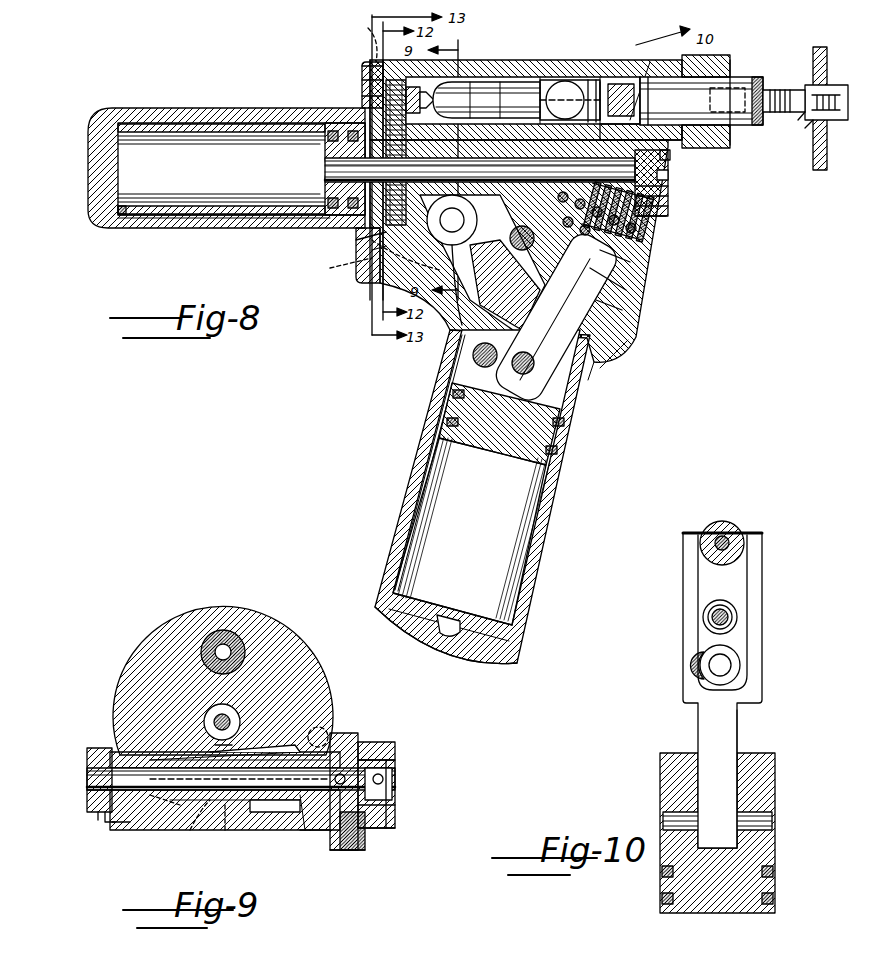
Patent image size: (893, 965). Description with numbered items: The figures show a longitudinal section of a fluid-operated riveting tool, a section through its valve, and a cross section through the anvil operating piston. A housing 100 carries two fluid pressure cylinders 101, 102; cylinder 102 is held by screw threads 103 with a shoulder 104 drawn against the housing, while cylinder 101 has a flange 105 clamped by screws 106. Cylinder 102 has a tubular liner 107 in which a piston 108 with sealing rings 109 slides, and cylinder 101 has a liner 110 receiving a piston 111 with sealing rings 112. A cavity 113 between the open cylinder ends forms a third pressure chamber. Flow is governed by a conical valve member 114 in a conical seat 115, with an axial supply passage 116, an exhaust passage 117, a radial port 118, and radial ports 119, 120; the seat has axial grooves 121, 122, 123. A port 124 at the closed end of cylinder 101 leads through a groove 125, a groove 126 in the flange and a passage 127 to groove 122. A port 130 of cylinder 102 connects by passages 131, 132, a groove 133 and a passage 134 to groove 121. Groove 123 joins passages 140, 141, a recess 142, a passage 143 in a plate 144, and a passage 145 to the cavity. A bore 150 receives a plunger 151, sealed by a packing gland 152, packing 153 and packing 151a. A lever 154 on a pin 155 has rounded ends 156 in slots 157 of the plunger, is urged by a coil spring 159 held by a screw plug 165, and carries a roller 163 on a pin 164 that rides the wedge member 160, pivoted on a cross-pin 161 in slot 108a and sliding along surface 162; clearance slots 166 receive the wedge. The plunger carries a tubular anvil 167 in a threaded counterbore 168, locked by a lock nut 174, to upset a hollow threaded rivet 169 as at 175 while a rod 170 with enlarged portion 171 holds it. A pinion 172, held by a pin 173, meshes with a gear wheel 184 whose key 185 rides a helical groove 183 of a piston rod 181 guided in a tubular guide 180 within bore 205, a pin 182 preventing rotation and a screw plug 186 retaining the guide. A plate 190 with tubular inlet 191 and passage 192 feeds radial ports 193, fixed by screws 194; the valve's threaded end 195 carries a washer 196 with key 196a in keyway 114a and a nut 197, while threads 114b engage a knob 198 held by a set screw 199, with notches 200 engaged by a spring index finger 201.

In FIG. 8, the housing 100 is at (527, 70).
In FIG. 9, the housing 100 is at (150, 658).
In FIG. 8, the fluid pressure cylinder 101 is at (128, 110).
In FIG. 8, the fluid pressure cylinder 102 is at (560, 520).
In FIG. 8, the screw threads 103 is at (636, 320).
In FIG. 8, the shoulder 104 is at (618, 352).
In FIG. 8, the flange 105 is at (368, 62).
In FIG. 8, the screws 106 is at (366, 30).
In FIG. 8, the tubular liner 107 is at (540, 556).
In FIG. 8, the piston 108 is at (550, 478).
In FIG. 10, the piston 108 is at (760, 851).
In FIG. 8, the slot 108a is at (592, 372).
In FIG. 10, the slot 108a is at (732, 760).
In FIG. 8, the sealing rings 109 is at (556, 455).
In FIG. 10, the sealing rings 109 is at (770, 892).
In FIG. 8, the liner 110 is at (186, 126).
In FIG. 8, the piston 111 is at (330, 132).
In FIG. 8, the sealing rings 112 is at (310, 221).
In FIG. 8, the cavity 113 is at (606, 126).
In FIG. 8, the valve member 114 is at (356, 278).
In FIG. 9, the valve member 114 is at (100, 770).
In FIG. 9, the keyway 114a is at (120, 826).
In FIG. 9, the threaded end 114b is at (390, 828).
In FIG. 9, the conical seat 115 is at (312, 832).
In FIG. 8, the supply passage 116 is at (366, 263).
In FIG. 9, the supply passage 116 is at (352, 733).
In FIG. 9, the exhaust passage 117 is at (100, 780).
In FIG. 8, the radial port 118 is at (505, 280).
In FIG. 9, the radial port 118 is at (274, 812).
In FIG. 8, the radial port 119 is at (500, 160).
In FIG. 9, the radial port 119 is at (170, 754).
In FIG. 8, the radial port 120 is at (322, 268).
In FIG. 9, the radial port 120 is at (160, 808).
In FIG. 8, the axial groove 121 is at (482, 265).
In FIG. 9, the axial groove 121 is at (302, 830).
In FIG. 8, the axial groove 122 is at (445, 245).
In FIG. 9, the axial groove 122 is at (170, 845).
In FIG. 8, the axial groove 123 is at (408, 162).
In FIG. 9, the axial groove 123 is at (210, 760).
In FIG. 8, the port 124 is at (120, 222).
In FIG. 8, the groove 125 is at (196, 214).
In FIG. 8, the groove 126 is at (356, 240).
In FIG. 8, the passage 127 is at (320, 268).
In FIG. 9, the passage 127 is at (215, 840).
In FIG. 8, the port 130 is at (472, 650).
In FIG. 8, the passage 131 is at (440, 640).
In FIG. 8, the passage 132 is at (395, 625).
In FIG. 8, the groove 133 is at (402, 535).
In FIG. 8, the passage 134 is at (460, 310).
In FIG. 9, the passage 134 is at (222, 830).
In FIG. 8, the passage 140 is at (505, 78).
In FIG. 9, the passage 140 is at (220, 758).
In FIG. 8, the passage 141 is at (548, 82).
In FIG. 8, the recess 142 is at (372, 250).
In FIG. 8, the passage 143 is at (338, 178).
In FIG. 8, the plate 144 is at (332, 164).
In FIG. 8, the passage 145 is at (660, 204).
In FIG. 9, the passage 145 is at (224, 740).
In FIG. 10, the passage 145 is at (708, 626).
In FIG. 8, the cylindrical bore 150 is at (472, 78).
In FIG. 9, the cylindrical bore 150 is at (248, 652).
In FIG. 8, the plunger 151 is at (682, 77).
In FIG. 10, the plunger 151 is at (712, 520).
In FIG. 8, the packing 151a is at (586, 80).
In FIG. 8, the packing gland 152 is at (712, 55).
In FIG. 8, the packing 153 is at (700, 60).
In FIG. 8, the lever 154 is at (636, 289).
In FIG. 8, the pin 155 is at (636, 305).
In FIG. 8, the lever ends 156 is at (615, 78).
In FIG. 8, the slots 157 is at (600, 78).
In FIG. 8, the coil spring 159 is at (644, 256).
In FIG. 10, the coil spring 159 is at (742, 662).
In FIG. 8, the wedge member 160 is at (560, 362).
In FIG. 10, the wedge member 160 is at (754, 692).
In FIG. 8, the cross-pin 161 is at (545, 385).
In FIG. 10, the cross-pin 161 is at (760, 804).
In FIG. 8, the surface 162 is at (644, 270).
In FIG. 8, the roller 163 is at (472, 355).
In FIG. 8, the pin 164 is at (485, 372).
In FIG. 8, the screw plug 165 is at (648, 234).
In FIG. 8, the clearance slots 166 is at (618, 62).
In FIG. 10, the clearance slots 166 is at (692, 530).
In FIG. 8, the tubular anvil 167 is at (800, 90).
In FIG. 8, the threaded counterbore 168 is at (730, 72).
In FIG. 8, the hollow threaded rivet 169 is at (810, 132).
In FIG. 8, the rod 170 is at (806, 122).
In FIG. 9, the rod 170 is at (226, 645).
In FIG. 10, the rod 170 is at (736, 520).
In FIG. 8, the enlarged integral portion 171 is at (436, 88).
In FIG. 8, the pinion 172 is at (362, 68).
In FIG. 8, the pin 173 is at (362, 82).
In FIG. 8, the lock nut 174 is at (790, 84).
In FIG. 8, the upset rivet portion 175 is at (828, 60).
In FIG. 8, the tubular guide 180 is at (662, 164).
In FIG. 9, the tubular guide 180 is at (240, 716).
In FIG. 10, the tubular guide 180 is at (730, 607).
In FIG. 8, the piston rod 181 is at (660, 190).
In FIG. 9, the piston rod 181 is at (232, 723).
In FIG. 10, the piston rod 181 is at (730, 619).
In FIG. 8, the pin 182 is at (664, 196).
In FIG. 8, the helical groove 183 is at (660, 218).
In FIG. 8, the gear wheel 184 is at (362, 98).
In FIG. 8, the key 185 is at (335, 128).
In FIG. 8, the screw plug 186 is at (668, 176).
In FIG. 9, the plate 190 is at (346, 850).
In FIG. 9, the tubular inlet 191 is at (362, 848).
In FIG. 9, the passage 192 is at (330, 845).
In FIG. 9, the radial ports 193 is at (382, 781).
In FIG. 9, the screws 194 is at (326, 728).
In FIG. 9, the threaded end 195 is at (90, 797).
In FIG. 9, the washer 196 is at (106, 820).
In FIG. 9, the key 196a is at (98, 815).
In FIG. 9, the threaded nut 197 is at (90, 758).
In FIG. 9, the knob 198 is at (386, 771).
In FIG. 9, the set screw 199 is at (385, 753).
In FIG. 9, the notches 200 is at (392, 810).
In FIG. 9, the spring index finger 201 is at (366, 742).
In FIG. 8, the bore 205 is at (670, 156).